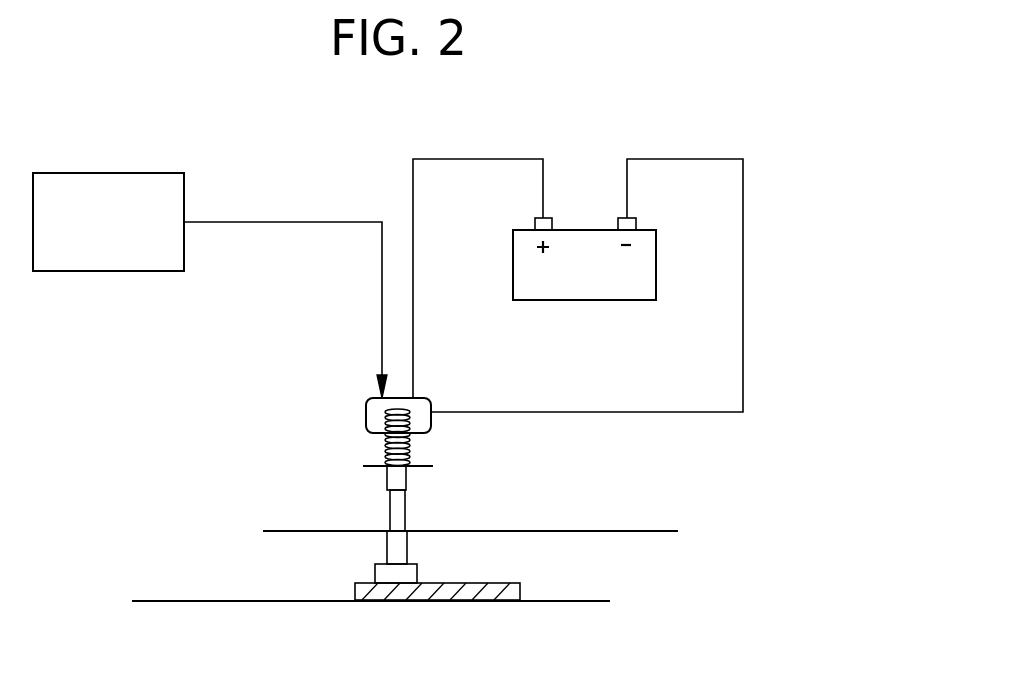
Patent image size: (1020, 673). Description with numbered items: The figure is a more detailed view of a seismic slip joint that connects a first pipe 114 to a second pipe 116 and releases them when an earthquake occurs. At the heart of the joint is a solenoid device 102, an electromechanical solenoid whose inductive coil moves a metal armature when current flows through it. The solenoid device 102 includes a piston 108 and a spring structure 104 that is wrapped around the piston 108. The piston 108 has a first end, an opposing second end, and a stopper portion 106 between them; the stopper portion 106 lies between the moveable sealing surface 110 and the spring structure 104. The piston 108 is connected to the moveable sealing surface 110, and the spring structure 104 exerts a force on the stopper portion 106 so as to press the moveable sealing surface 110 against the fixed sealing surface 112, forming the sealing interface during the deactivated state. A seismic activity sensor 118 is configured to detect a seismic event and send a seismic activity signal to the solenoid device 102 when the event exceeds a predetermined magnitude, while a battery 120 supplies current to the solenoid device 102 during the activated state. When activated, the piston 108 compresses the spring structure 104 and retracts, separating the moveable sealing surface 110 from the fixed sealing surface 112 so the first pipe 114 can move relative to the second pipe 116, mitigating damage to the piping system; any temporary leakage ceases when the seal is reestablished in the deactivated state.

The solenoid device 102 is at (326, 413).
The spring structure 104 is at (383, 448).
The stopper portion 106 is at (363, 467).
The piston 108 is at (376, 543).
The moveable sealing surface 110 is at (410, 575).
The fixed sealing surface 112 is at (520, 592).
The first pipe 114 is at (190, 600).
The second pipe 116 is at (622, 530).
The seismic activity sensor 118 is at (88, 173).
The battery 120 is at (640, 267).